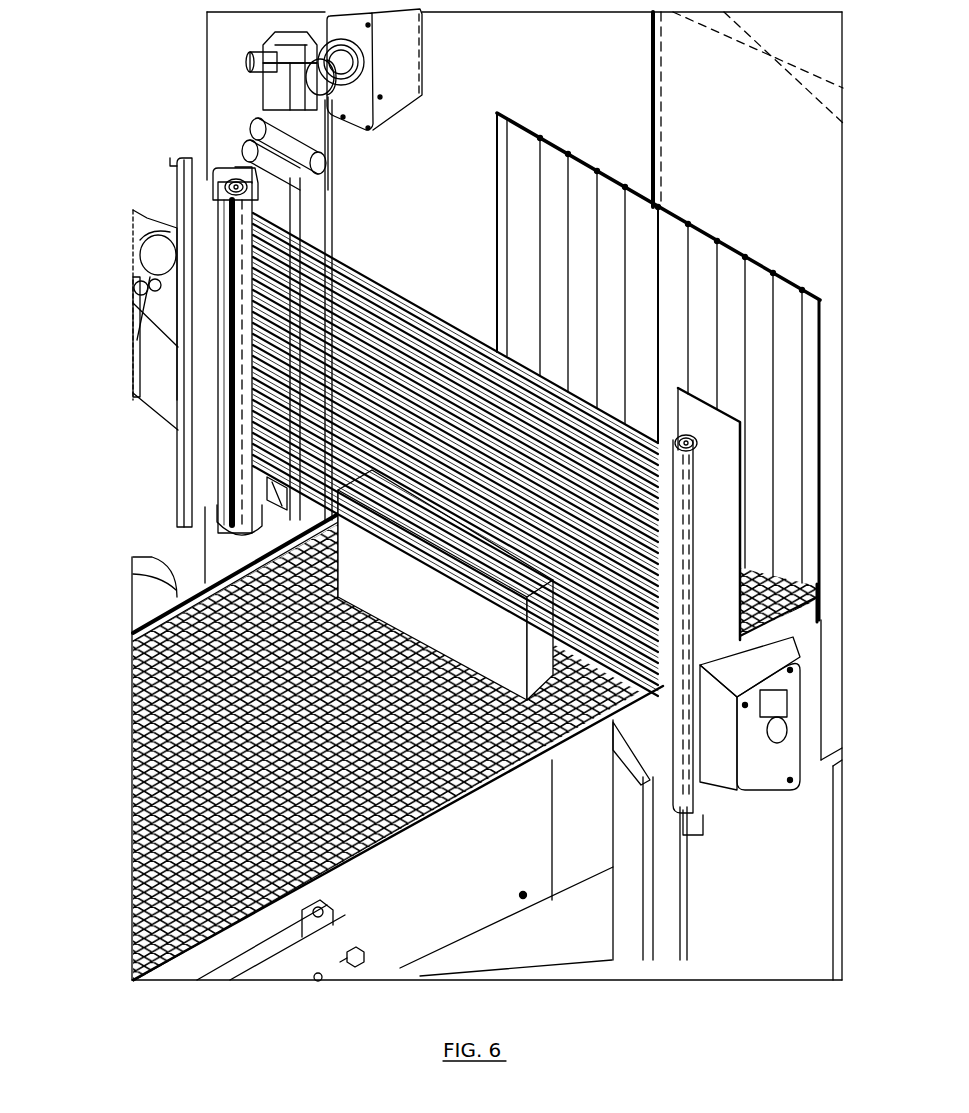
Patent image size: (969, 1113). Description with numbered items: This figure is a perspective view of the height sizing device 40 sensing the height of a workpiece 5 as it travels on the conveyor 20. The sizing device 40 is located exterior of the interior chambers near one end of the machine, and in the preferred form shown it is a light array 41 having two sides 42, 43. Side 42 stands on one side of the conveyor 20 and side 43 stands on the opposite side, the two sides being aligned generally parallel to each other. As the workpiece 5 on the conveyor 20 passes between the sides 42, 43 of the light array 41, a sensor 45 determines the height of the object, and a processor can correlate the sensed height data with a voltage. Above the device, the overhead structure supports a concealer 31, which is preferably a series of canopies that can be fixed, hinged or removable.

The workpiece 5 is at (448, 618).
The conveyor 20 is at (134, 783).
The concealer 31 is at (742, 172).
The height sizing device 40 is at (220, 480).
The light array 41 is at (222, 363).
The side of light array 42 is at (672, 588).
The side of light array 43 is at (228, 330).
The sensor 45 is at (255, 262).